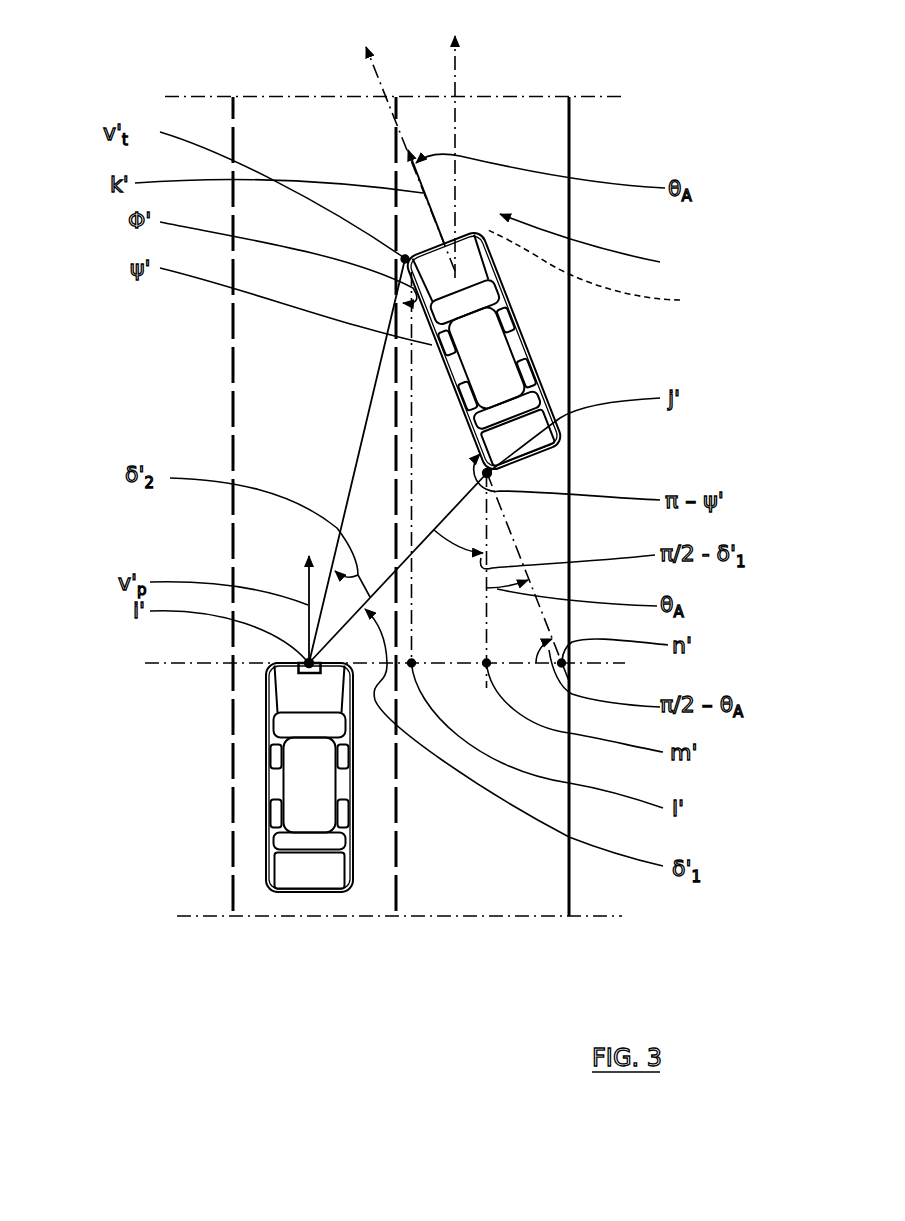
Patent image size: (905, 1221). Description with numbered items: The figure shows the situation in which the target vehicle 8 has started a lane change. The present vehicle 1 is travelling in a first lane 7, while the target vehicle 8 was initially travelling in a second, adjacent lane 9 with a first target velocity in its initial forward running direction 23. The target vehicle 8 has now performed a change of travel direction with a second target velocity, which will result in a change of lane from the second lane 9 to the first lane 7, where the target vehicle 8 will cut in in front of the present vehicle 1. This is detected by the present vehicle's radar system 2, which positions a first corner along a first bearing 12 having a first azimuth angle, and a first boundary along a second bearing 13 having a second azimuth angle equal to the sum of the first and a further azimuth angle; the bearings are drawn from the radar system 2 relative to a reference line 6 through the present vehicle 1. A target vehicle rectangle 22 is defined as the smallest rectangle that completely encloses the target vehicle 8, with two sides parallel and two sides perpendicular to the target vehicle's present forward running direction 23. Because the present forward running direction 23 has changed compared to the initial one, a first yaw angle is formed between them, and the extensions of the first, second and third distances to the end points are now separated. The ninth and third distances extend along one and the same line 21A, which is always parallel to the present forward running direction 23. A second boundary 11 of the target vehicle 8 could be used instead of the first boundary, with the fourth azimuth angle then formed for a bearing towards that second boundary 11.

The present vehicle 1 is at (312, 788).
The radar system 2 is at (293, 658).
The reference axis 6 is at (215, 663).
The first lane 7 is at (329, 118).
The target vehicle 8 is at (485, 373).
The second lane 9 is at (592, 245).
The second boundary 11 is at (569, 437).
The first bearing 12 is at (362, 415).
The second bearing 13 is at (455, 507).
The line of the ninth and third distances 21A is at (530, 582).
The target vehicle rectangle 22 is at (600, 271).
The forward running direction 23 is at (458, 143).